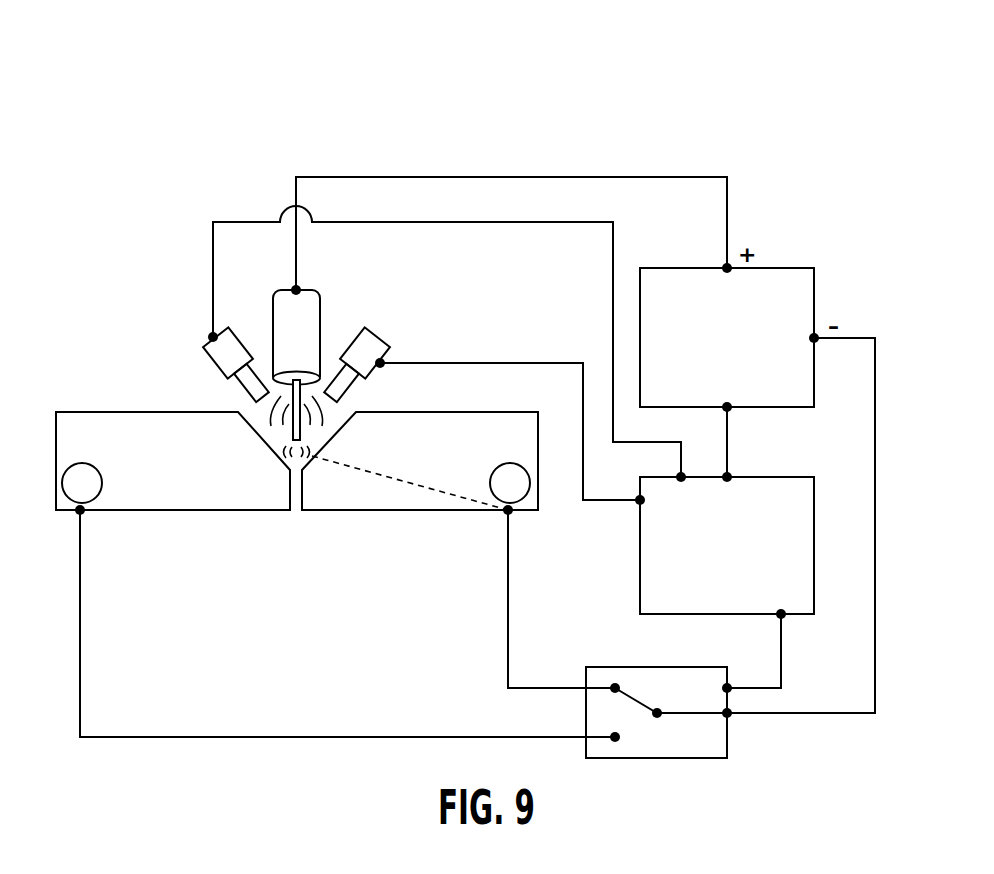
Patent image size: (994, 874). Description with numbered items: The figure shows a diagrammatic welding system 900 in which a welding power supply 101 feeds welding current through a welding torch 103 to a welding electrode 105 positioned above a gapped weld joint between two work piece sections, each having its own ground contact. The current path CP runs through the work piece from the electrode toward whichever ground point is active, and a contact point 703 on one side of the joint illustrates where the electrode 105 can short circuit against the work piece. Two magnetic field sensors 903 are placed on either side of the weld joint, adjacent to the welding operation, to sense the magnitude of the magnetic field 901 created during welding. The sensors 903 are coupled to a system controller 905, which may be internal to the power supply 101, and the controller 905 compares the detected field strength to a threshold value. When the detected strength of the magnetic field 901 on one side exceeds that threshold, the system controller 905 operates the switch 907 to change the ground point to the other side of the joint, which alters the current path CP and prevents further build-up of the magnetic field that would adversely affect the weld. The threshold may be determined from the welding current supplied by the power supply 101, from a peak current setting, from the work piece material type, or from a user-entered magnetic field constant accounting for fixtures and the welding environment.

The welding system 900 is at (505, 82).
The magnetic field sensor 903 is at (204, 346).
The magnetic field 901 is at (268, 425).
The welding torch 103 is at (309, 320).
The welding electrode 105 is at (299, 416).
The short circuit contact point 703 is at (282, 456).
The current path CP is at (398, 482).
The welding power supply 101 is at (812, 268).
The system controller 905 is at (640, 545).
The switch 907 is at (657, 758).